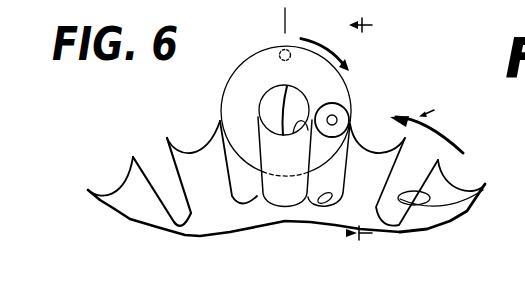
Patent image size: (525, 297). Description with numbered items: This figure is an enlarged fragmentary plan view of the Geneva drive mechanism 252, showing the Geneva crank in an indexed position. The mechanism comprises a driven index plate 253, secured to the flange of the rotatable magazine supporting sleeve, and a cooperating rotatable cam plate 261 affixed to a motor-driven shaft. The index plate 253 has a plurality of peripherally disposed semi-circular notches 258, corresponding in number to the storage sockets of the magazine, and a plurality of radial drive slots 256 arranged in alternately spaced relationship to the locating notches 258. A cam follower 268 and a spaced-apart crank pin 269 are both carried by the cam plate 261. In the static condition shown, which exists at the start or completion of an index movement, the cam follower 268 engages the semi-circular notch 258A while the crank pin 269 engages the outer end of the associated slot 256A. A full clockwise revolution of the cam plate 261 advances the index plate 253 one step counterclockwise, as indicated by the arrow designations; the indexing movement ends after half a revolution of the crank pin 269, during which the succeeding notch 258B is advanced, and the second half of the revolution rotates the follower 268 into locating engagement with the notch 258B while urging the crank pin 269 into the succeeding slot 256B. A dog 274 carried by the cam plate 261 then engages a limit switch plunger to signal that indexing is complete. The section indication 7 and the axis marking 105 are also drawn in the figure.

The axis of rotation 105 is at (292, 13).
The section line 7- 7 is at (357, 127).
The Geneva drive mechanism 252 is at (392, 96).
The index plate 253 is at (127, 207).
The radial drive slots 256 is at (240, 163).
The slot 256A is at (330, 200).
The succeeding slot 256B is at (452, 217).
The semi-circular notches 258 is at (125, 184).
The semi-circular notch 258A is at (285, 162).
The succeeding notch 258B is at (377, 159).
The cam plate 261 is at (222, 97).
The cam follower 268 is at (282, 90).
The crank pin 269 is at (344, 109).
The dog 274 is at (280, 51).